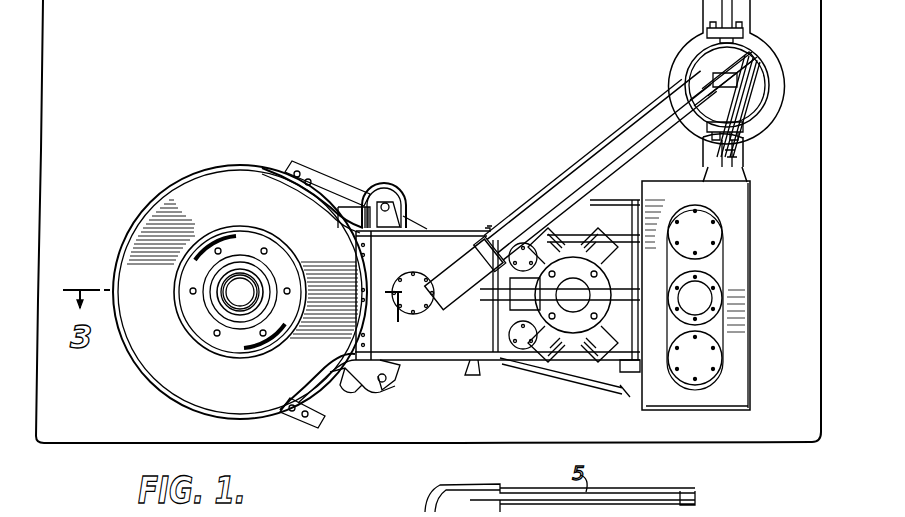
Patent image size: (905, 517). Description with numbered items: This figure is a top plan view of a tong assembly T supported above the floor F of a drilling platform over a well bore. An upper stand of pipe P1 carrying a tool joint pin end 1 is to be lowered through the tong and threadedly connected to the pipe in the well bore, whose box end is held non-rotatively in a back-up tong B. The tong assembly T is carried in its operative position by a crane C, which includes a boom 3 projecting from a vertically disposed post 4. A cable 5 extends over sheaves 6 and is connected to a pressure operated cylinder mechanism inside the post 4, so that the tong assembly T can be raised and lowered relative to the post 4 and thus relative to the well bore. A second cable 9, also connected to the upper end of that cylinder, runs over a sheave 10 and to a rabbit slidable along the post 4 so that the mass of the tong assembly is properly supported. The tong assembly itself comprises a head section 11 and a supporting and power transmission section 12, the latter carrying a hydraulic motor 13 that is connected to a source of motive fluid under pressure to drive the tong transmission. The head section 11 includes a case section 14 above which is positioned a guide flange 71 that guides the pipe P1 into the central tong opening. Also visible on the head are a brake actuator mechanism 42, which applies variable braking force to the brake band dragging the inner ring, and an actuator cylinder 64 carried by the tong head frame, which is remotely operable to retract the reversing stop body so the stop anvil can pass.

The tool joint pin end 1 is at (248, 254).
The boom 3 is at (547, 193).
The post 4 is at (765, 84).
The cable 5 is at (580, 168).
The sheaves 6 is at (712, 80).
The second cable 9 is at (740, 103).
The sheave 10 is at (733, 140).
The head section 11 is at (235, 160).
The supporting and power transmission section 12 is at (618, 390).
The hydraulic motor 13 is at (583, 348).
The case section 14 is at (148, 338).
The brake actuator mechanism 42 is at (345, 203).
The actuator cylinder 64 is at (332, 397).
The flange 71 is at (185, 275).
The back-up tong B is at (672, 53).
The crane C is at (645, 108).
The floor F is at (74, 445).
The upper stand of pipe P1 is at (248, 254).
The tong assembly T is at (426, 222).